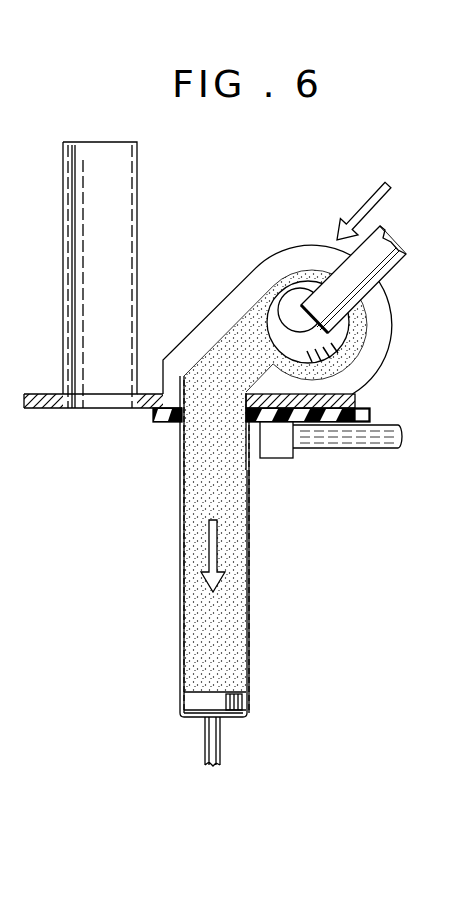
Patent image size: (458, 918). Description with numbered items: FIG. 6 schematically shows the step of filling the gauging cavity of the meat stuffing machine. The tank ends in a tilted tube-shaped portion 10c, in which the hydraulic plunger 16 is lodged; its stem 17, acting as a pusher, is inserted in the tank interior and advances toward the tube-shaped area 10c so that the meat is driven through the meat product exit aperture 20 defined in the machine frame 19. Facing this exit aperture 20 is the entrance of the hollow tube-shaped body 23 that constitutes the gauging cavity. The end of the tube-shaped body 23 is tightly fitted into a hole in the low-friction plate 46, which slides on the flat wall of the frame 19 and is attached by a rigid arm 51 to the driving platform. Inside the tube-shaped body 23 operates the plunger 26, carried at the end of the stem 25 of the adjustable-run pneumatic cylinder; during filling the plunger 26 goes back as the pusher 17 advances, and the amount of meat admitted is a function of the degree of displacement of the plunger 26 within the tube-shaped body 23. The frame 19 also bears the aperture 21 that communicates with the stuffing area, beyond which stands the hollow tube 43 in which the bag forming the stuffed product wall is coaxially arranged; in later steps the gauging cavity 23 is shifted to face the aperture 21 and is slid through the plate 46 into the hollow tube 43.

The tube-shaped portion 10c is at (240, 330).
The hydraulic plunger 16 is at (385, 262).
The stem 17 is at (293, 297).
The machine frame 19 is at (347, 400).
The meat product exit aperture 20 is at (207, 400).
The aperture 21 is at (98, 402).
The hollow tube-shaped body 23 is at (248, 610).
The stem 25 is at (222, 745).
The plunger 26 is at (240, 700).
The hollow tube 43 is at (138, 182).
The plate 46 is at (363, 412).
The rigid arm 51 is at (357, 438).